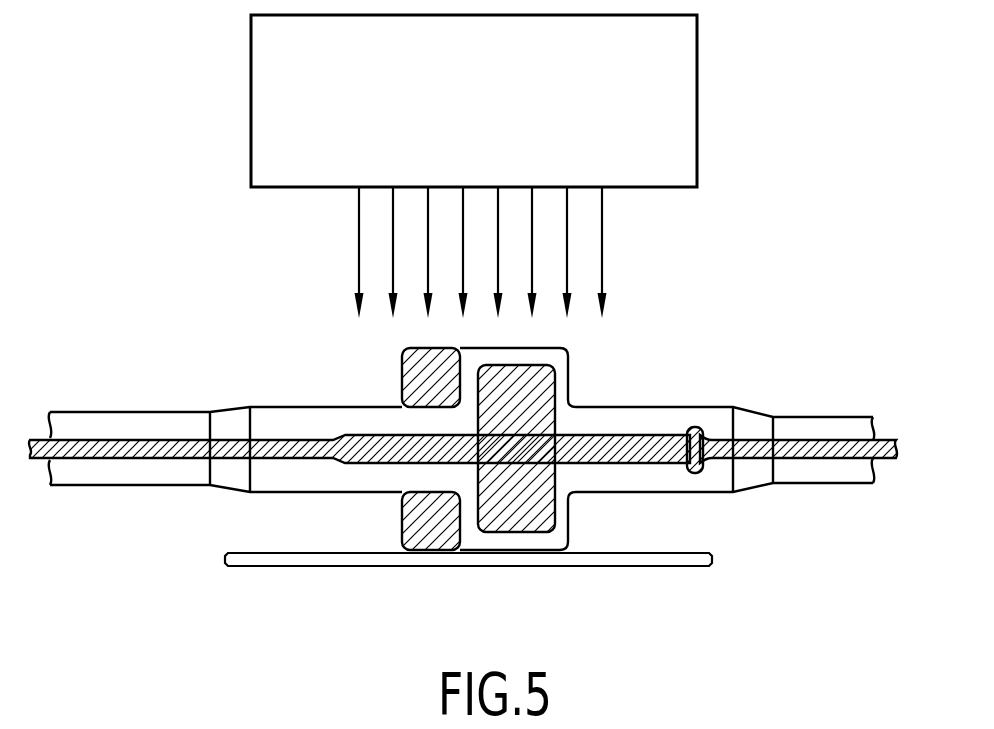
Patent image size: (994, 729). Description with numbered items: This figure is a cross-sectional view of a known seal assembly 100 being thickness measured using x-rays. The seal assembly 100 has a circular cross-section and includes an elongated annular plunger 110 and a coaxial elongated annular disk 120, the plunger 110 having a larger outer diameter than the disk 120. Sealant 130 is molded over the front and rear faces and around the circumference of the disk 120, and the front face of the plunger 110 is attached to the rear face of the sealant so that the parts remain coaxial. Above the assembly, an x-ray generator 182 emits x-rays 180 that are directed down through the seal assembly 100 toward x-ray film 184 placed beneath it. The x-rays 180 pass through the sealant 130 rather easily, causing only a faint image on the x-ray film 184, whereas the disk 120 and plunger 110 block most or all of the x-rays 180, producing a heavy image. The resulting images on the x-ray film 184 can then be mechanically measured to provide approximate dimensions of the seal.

The seal assembly 100 is at (382, 506).
The plunger 110 is at (430, 540).
The disk 120 is at (512, 515).
The sealant 130 is at (560, 540).
The x-rays 180 is at (602, 259).
The x-ray generator 182 is at (495, 120).
The x-ray film 184 is at (680, 580).